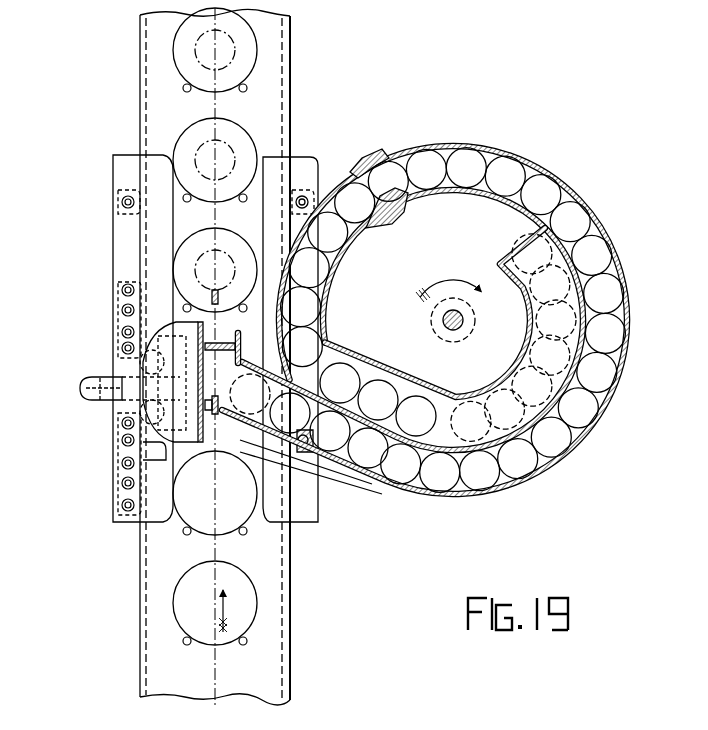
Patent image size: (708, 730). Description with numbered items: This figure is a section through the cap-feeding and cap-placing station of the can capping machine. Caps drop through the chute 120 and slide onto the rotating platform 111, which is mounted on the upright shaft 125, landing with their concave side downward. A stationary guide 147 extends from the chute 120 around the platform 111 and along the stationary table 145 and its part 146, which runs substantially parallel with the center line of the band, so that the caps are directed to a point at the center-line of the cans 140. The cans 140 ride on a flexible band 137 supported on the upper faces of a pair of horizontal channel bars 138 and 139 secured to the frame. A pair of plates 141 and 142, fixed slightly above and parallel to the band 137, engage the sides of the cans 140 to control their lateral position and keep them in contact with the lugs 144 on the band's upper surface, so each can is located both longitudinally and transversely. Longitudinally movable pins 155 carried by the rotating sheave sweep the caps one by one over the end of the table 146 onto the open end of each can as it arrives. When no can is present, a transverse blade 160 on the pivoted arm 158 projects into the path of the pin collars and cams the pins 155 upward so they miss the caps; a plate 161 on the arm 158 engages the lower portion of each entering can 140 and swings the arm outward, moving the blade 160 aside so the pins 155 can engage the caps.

The platform 111 is at (500, 407).
The chute 120 is at (537, 232).
The upright shaft 125 is at (456, 316).
The flexible band 137 is at (165, 127).
The channel bar 138 is at (140, 640).
The channel bar 139 is at (291, 668).
The cans 140 is at (247, 203).
The plate 141 is at (128, 240).
The plate 142 is at (305, 499).
The lugs 144 is at (243, 88).
The stationary table 145 is at (322, 468).
The table part 146 is at (150, 336).
The stationary guide 147 is at (550, 233).
The pins 155 is at (210, 296).
The arm 158 is at (80, 386).
The transverse blade 160 is at (196, 323).
The plate 161 is at (157, 448).